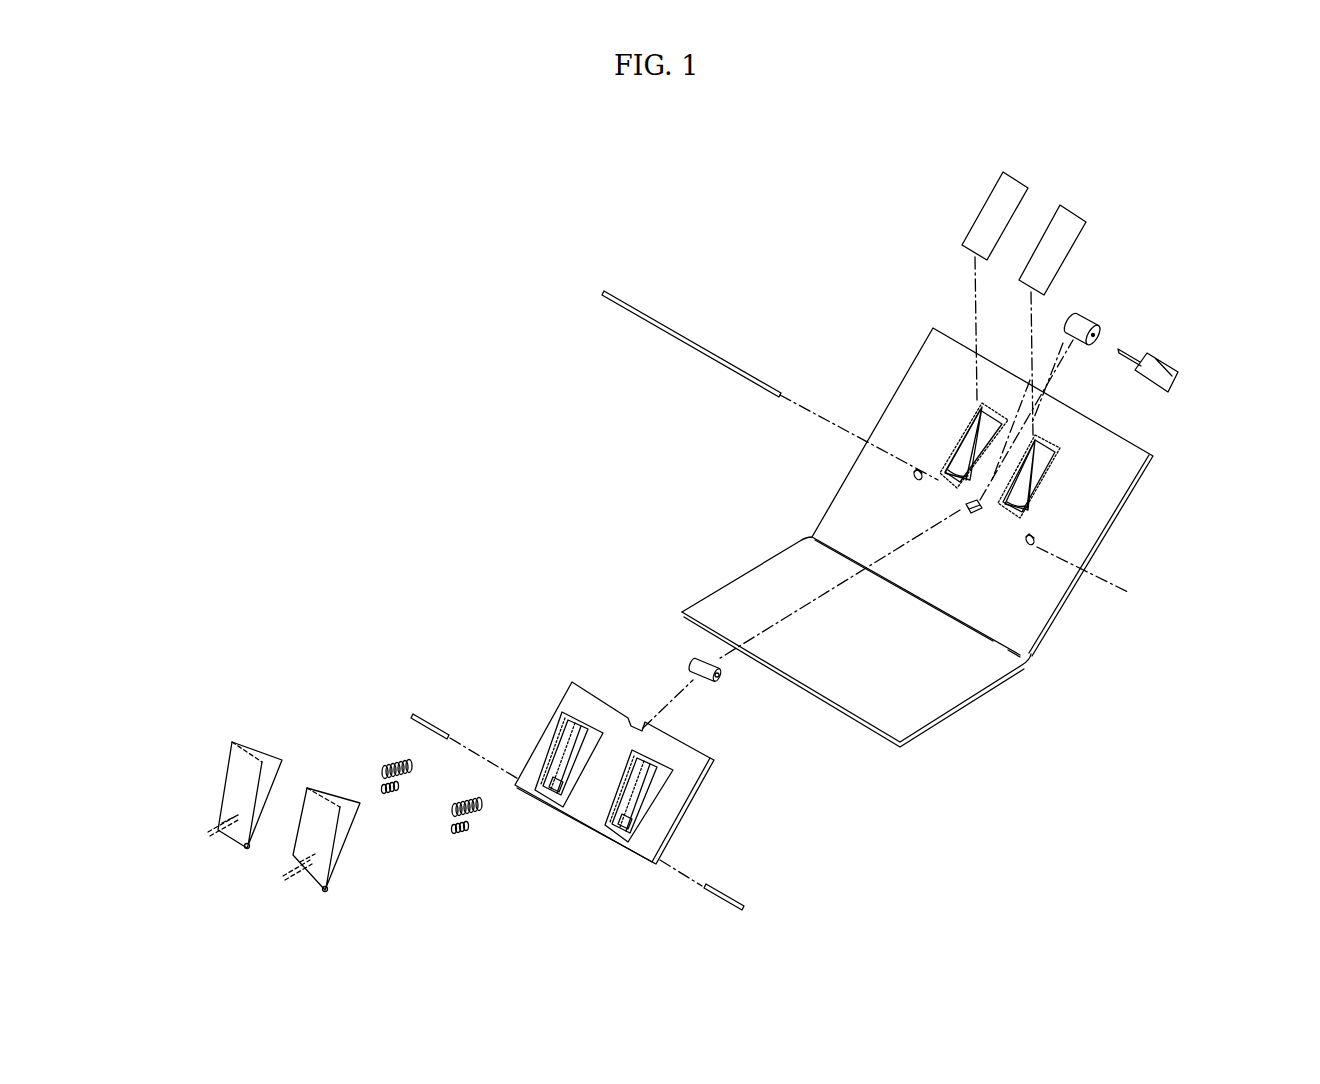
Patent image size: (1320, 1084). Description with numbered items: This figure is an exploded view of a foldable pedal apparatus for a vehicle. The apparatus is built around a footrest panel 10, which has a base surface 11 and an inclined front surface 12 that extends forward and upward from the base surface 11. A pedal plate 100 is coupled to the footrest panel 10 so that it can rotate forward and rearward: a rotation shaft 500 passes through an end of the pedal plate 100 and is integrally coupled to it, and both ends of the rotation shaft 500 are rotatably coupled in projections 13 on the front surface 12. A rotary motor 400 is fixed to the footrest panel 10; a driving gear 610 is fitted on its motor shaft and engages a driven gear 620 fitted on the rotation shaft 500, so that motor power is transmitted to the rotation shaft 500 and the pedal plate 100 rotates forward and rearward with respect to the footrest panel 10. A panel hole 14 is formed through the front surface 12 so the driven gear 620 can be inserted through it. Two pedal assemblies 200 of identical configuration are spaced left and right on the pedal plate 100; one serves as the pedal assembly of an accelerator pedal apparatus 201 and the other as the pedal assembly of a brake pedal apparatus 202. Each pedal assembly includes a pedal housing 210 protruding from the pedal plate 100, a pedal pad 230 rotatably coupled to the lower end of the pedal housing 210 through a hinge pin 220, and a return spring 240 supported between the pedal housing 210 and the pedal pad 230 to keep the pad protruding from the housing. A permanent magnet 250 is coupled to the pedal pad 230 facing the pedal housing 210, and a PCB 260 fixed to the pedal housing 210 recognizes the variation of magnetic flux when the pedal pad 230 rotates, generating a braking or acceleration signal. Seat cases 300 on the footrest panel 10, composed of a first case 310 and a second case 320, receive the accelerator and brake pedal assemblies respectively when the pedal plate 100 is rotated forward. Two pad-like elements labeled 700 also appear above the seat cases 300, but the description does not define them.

The footrest panel 10 is at (947, 537).
The base surface 11 is at (738, 595).
The front surface 12 is at (1128, 473).
The projections 13 is at (915, 470).
The panel hole 14 is at (977, 512).
The pedal plate 100 is at (625, 777).
The pedal assemblies 200 is at (312, 796).
The accelerator pedal apparatus 201 is at (342, 855).
The brake pedal apparatus 202 is at (247, 736).
The pedal housing 210 is at (565, 740).
The hinge pin 220 is at (414, 712).
The pedal pad 230 is at (232, 768).
The return spring 240 is at (378, 788).
The permanent magnet 250 is at (234, 820).
The Printed Circuit Board (PCB) 260 is at (556, 788).
The seat cases 300 is at (1024, 400).
The first case 310 is at (1040, 472).
The second case 320 is at (953, 455).
The rotary motor 400 is at (1160, 366).
The rotation shaft 500 is at (685, 340).
The driving gear 610 is at (1085, 320).
The driven gear 620 is at (700, 662).
The pad 700 is at (1067, 215).